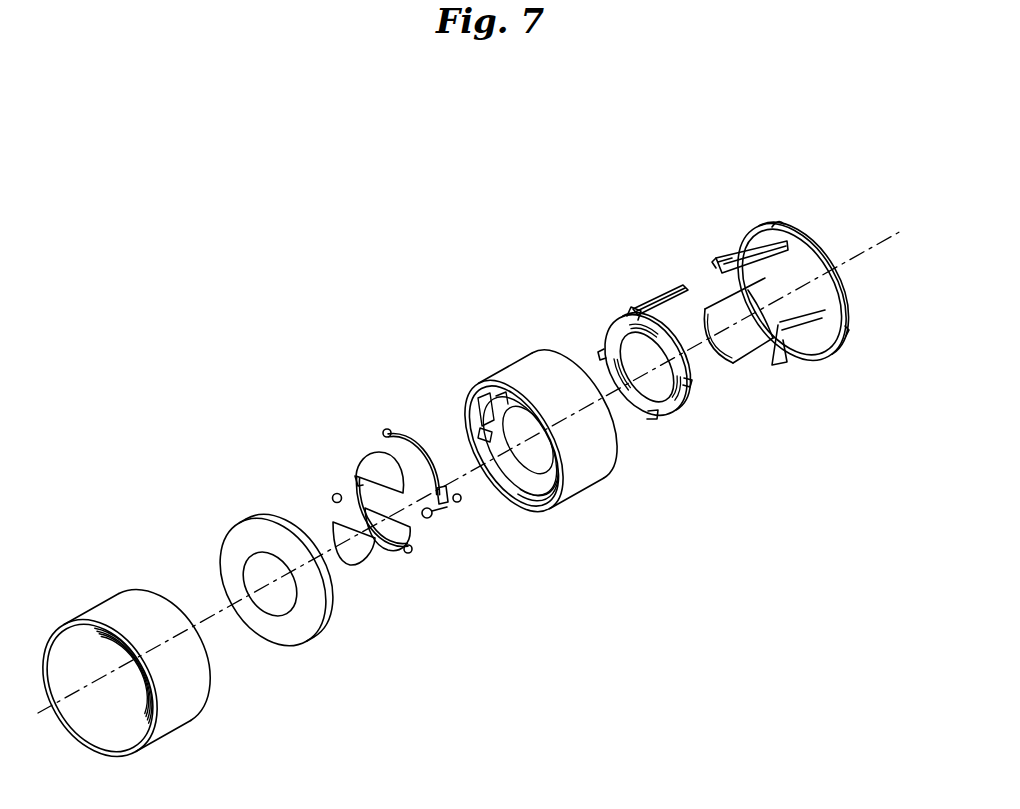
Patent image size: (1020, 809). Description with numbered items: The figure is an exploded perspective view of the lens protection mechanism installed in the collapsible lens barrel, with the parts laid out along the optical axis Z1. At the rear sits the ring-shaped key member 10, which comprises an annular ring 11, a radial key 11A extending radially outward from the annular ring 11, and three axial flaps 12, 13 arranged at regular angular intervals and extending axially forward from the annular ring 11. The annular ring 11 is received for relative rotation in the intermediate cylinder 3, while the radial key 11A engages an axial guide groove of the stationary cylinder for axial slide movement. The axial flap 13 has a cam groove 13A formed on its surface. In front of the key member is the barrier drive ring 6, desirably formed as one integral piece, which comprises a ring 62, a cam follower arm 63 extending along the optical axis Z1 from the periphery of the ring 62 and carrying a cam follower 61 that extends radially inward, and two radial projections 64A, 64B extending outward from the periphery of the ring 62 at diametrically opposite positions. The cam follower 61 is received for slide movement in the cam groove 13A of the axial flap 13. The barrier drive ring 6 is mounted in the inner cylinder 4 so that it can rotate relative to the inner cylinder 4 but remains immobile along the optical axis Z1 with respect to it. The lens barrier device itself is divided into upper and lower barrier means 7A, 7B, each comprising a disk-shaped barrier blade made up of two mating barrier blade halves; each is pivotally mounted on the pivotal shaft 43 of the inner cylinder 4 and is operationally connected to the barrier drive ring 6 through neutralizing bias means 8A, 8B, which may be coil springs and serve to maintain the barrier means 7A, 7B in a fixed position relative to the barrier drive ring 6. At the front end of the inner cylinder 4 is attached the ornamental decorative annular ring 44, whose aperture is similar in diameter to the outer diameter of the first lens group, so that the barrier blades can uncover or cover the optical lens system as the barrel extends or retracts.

The intermediate cylinder 3 is at (120, 602).
The ornamental decorative annular ring 44 is at (318, 616).
The upper barrier means 7A is at (399, 378).
The lower barrier means 7B is at (440, 568).
The neutralizing bias means 8A is at (440, 524).
The neutralizing bias means 8B is at (322, 478).
The inner cylinder 4 is at (537, 438).
The pivotal shaft 43 is at (468, 440).
The barrier drive ring 6 is at (632, 357).
The cam follower 61 is at (679, 289).
The ring 62 is at (642, 410).
The cam follower arm 63 is at (637, 308).
The radial projection 64A is at (686, 406).
The radial projection 64B is at (604, 352).
The ring-shaped key member 10 is at (776, 315).
The annular ring 11 is at (840, 285).
The radial key 11A is at (768, 224).
The axial flap 12 is at (745, 337).
The axial flap 13 is at (717, 265).
The cam groove 13A is at (738, 246).
The optical axis Z1 is at (863, 243).